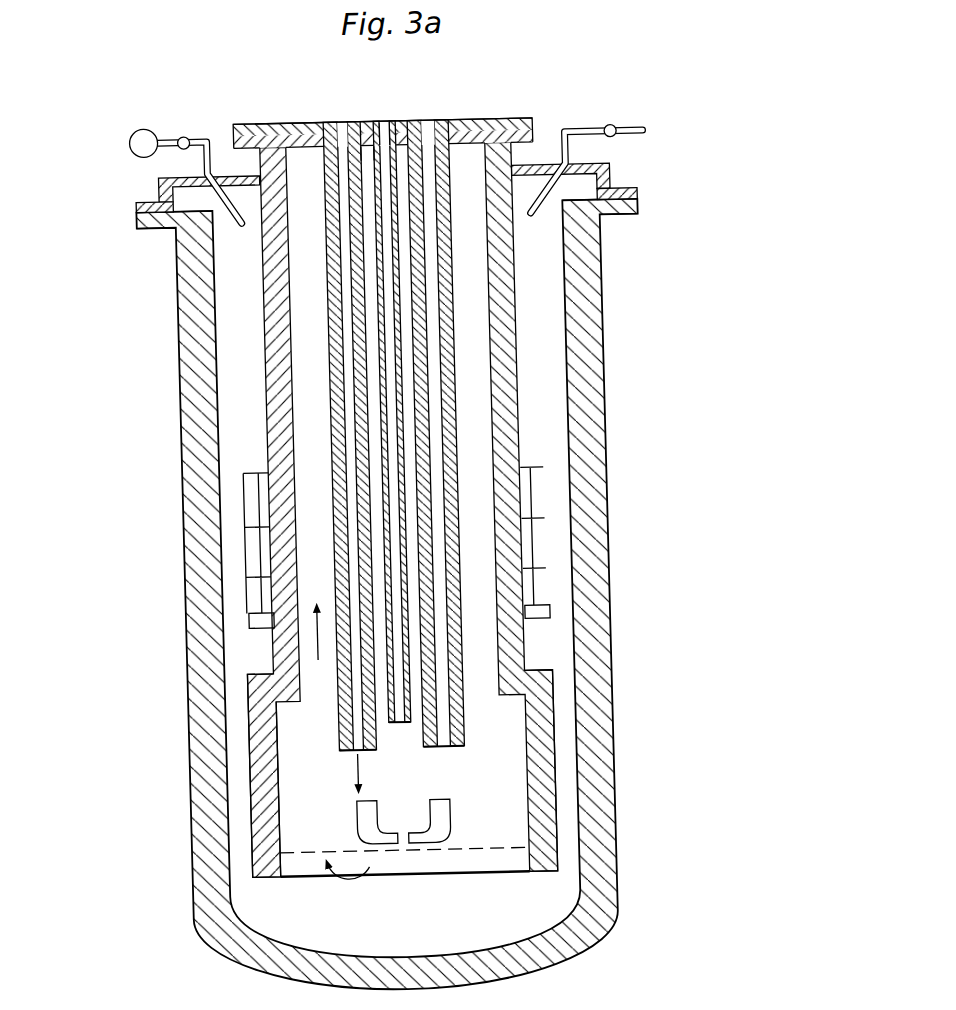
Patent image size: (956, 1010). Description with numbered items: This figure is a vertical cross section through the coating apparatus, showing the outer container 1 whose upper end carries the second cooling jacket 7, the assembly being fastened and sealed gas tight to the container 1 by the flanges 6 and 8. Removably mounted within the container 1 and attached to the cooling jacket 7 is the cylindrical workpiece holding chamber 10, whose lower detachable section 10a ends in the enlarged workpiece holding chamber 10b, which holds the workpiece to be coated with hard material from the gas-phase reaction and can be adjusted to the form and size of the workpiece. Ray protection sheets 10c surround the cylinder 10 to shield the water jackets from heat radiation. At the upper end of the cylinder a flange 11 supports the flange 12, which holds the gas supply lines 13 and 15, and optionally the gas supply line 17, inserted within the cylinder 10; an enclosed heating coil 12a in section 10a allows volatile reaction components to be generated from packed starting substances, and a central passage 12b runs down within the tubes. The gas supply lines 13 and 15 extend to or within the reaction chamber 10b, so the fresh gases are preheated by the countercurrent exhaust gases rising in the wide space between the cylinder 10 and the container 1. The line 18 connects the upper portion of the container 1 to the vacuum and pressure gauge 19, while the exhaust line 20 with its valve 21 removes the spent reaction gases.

The container 1 is at (596, 582).
The flange 6 is at (147, 216).
The second cooling jacket 7 is at (168, 181).
The flange 8 is at (145, 201).
The workpiece holding chamber 10 is at (524, 860).
The detachable section 10a is at (288, 650).
The enlarged workpiece holding chamber 10b is at (272, 790).
The ray protection sheets 10c is at (248, 467).
The flange 11 is at (538, 133).
The flange 12 is at (510, 120).
The heating coil 12a is at (394, 130).
The inner tube 12b is at (396, 725).
The gas supply line 13 is at (350, 127).
The gas supply line 15 is at (438, 126).
The gas supply line 17 is at (398, 82).
The line 18 is at (176, 135).
The vacuum and pressure gauge 19 is at (139, 137).
The gas exhaust line 20 is at (642, 139).
The valve 21 is at (622, 130).
The element workpiece is at (415, 840).